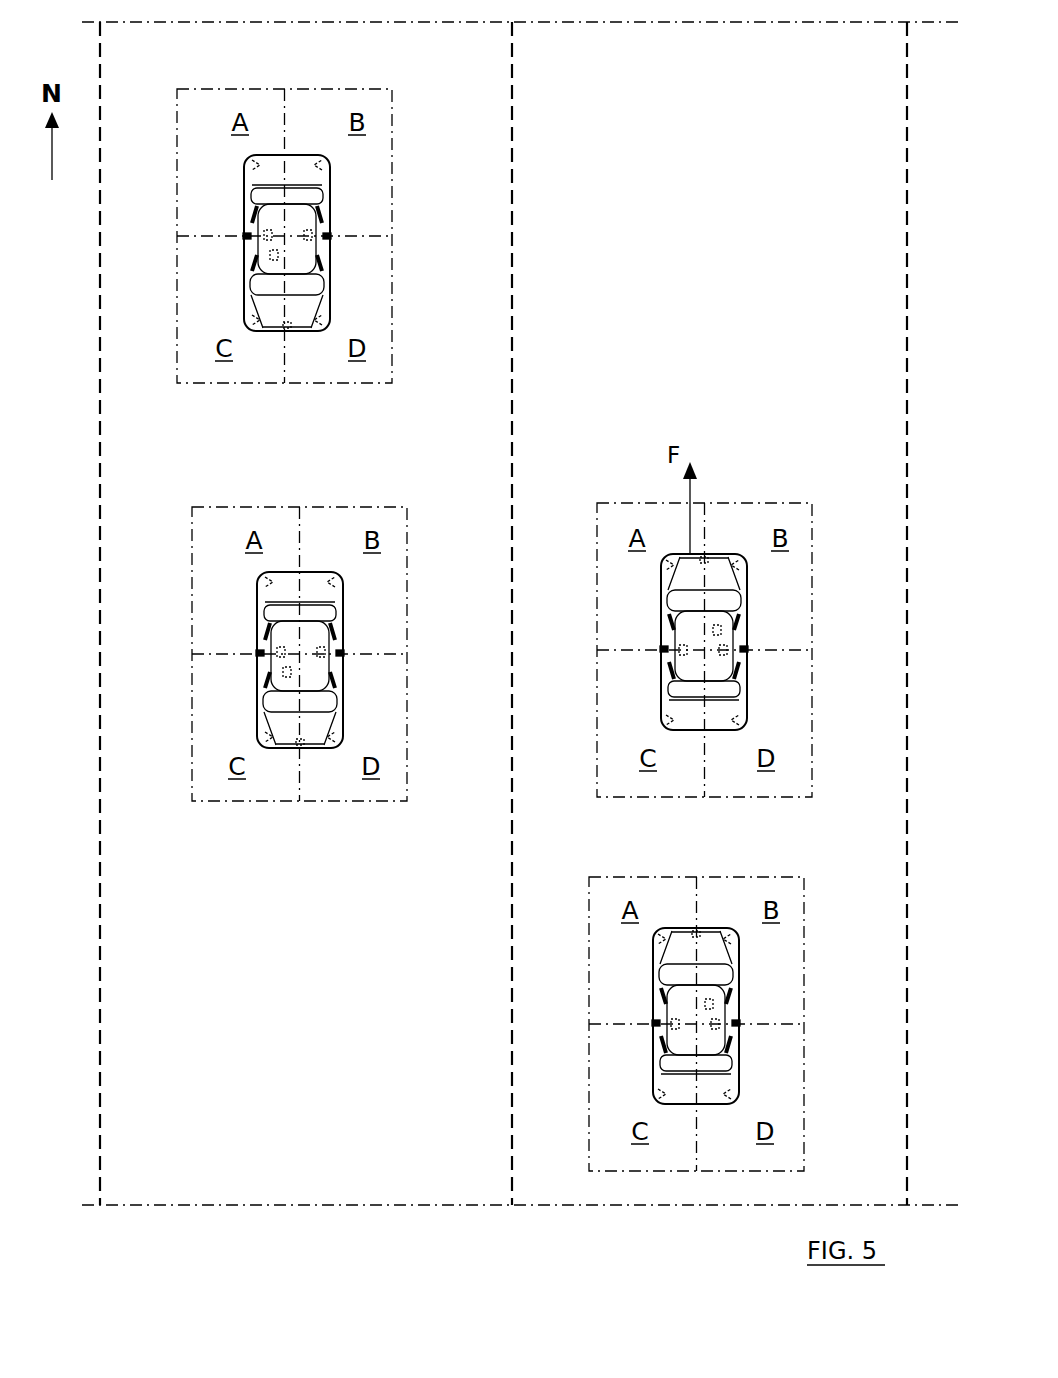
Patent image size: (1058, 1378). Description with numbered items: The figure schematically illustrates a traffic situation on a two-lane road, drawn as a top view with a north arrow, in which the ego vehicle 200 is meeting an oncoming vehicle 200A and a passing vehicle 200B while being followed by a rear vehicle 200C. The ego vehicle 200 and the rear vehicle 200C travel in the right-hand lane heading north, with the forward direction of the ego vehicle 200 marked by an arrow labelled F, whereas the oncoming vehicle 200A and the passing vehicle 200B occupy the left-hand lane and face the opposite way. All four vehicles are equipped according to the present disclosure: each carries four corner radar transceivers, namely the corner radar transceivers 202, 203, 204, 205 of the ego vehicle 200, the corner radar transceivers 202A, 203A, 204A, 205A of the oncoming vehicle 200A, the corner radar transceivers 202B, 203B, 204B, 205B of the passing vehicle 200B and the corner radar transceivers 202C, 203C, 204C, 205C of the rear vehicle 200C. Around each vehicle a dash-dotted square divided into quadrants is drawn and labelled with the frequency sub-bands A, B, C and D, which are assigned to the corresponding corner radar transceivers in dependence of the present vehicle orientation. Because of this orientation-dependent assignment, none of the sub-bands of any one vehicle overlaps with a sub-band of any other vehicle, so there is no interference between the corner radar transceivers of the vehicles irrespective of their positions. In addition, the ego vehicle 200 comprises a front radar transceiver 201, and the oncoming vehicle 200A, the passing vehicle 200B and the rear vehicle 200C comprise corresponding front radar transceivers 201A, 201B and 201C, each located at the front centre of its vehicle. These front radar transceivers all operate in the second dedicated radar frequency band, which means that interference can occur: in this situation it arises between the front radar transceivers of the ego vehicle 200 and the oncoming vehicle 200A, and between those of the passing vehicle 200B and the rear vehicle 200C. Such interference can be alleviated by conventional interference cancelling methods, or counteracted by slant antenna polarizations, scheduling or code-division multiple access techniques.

The ego vehicle 200 is at (718, 600).
The front radar transceiver 201 is at (708, 554).
The corner radar transceiver 202 is at (672, 554).
The corner radar transceiver 203 is at (738, 554).
The corner radar transceiver 204 is at (662, 712).
The corner radar transceiver 205 is at (747, 712).
The oncoming vehicle 200A is at (298, 173).
The front radar transceiver 201A is at (286, 332).
The corner radar transceiver 202A is at (328, 318).
The corner radar transceiver 203A is at (243, 318).
The corner radar transceiver 204A is at (325, 163).
The corner radar transceiver 205A is at (246, 164).
The passing vehicle 200B is at (310, 590).
The front radar transceiver 201B is at (298, 748).
The corner radar transceiver 202B is at (343, 735).
The corner radar transceiver 203B is at (258, 733).
The corner radar transceiver 204B is at (343, 580).
The corner radar transceiver 205B is at (257, 578).
The rear vehicle 200C is at (710, 973).
The front radar transceiver 201C is at (694, 925).
The corner radar transceiver 202C is at (654, 937).
The corner radar transceiver 203C is at (728, 926).
The corner radar transceiver 204C is at (652, 1088).
The corner radar transceiver 205C is at (740, 1088).